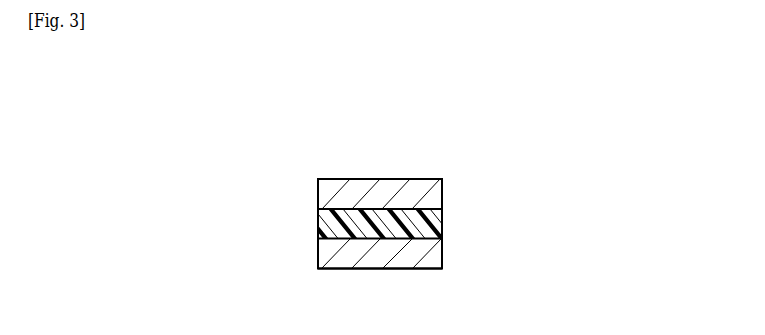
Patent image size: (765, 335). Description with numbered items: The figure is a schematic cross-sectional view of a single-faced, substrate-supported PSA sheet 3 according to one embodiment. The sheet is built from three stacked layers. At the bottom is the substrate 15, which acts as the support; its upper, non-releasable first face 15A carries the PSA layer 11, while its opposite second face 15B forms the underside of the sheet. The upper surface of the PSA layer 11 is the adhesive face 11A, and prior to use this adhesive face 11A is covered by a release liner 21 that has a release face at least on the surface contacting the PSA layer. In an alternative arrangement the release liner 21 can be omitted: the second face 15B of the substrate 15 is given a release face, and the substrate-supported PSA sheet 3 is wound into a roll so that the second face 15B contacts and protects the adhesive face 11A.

The substrate-supported PSA sheet 3 is at (553, 182).
The release liner 21 is at (442, 192).
The PSA layer 11 is at (442, 225).
The substrate 15 is at (442, 255).
The adhesive face 11A is at (326, 208).
The first face 15A is at (323, 237).
The second face 15B is at (342, 270).